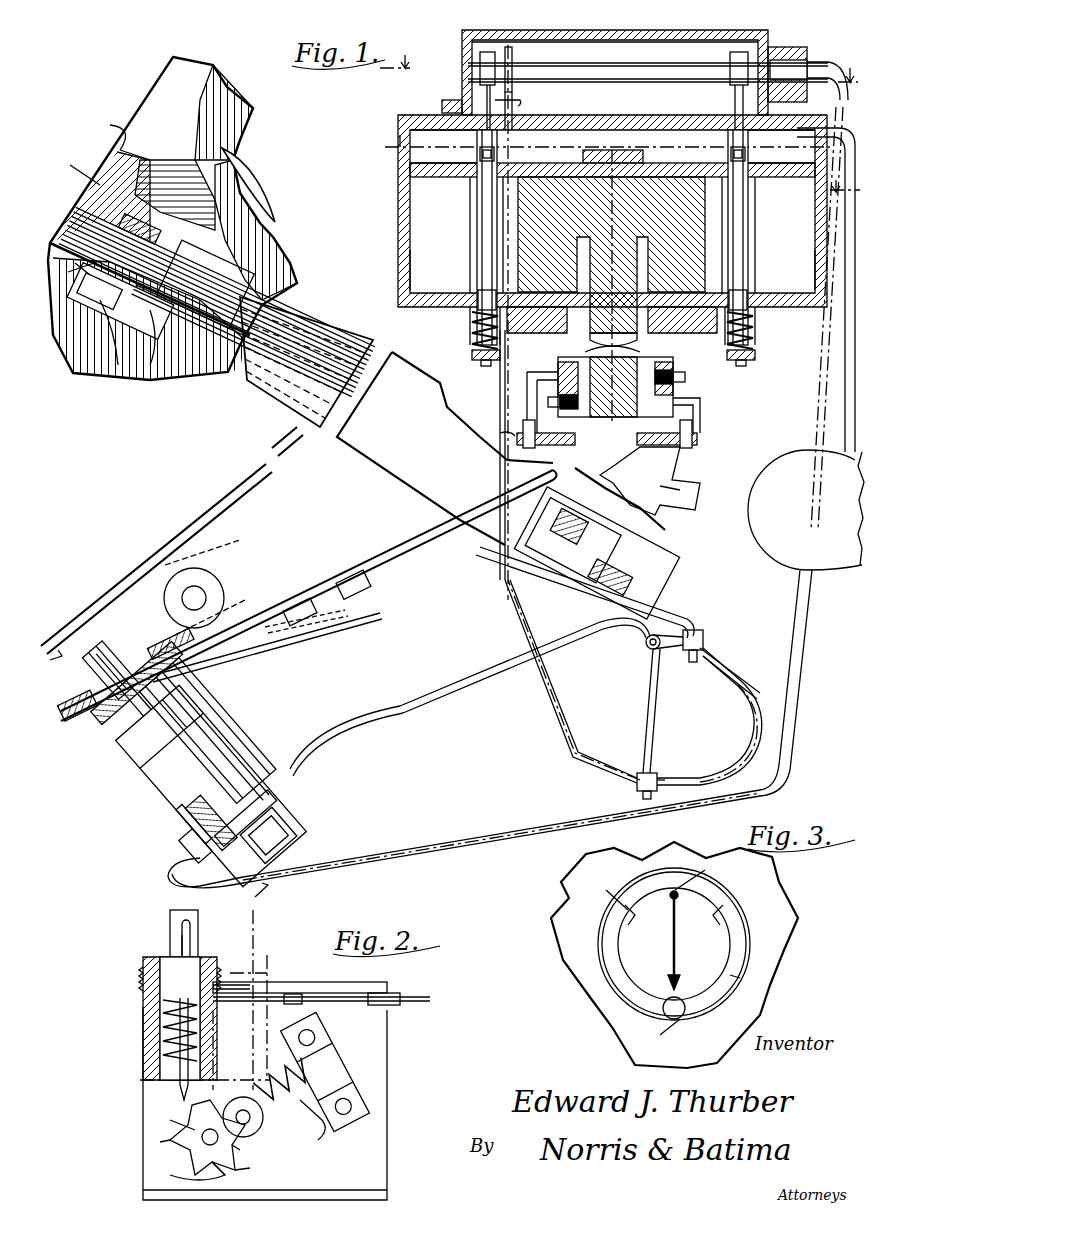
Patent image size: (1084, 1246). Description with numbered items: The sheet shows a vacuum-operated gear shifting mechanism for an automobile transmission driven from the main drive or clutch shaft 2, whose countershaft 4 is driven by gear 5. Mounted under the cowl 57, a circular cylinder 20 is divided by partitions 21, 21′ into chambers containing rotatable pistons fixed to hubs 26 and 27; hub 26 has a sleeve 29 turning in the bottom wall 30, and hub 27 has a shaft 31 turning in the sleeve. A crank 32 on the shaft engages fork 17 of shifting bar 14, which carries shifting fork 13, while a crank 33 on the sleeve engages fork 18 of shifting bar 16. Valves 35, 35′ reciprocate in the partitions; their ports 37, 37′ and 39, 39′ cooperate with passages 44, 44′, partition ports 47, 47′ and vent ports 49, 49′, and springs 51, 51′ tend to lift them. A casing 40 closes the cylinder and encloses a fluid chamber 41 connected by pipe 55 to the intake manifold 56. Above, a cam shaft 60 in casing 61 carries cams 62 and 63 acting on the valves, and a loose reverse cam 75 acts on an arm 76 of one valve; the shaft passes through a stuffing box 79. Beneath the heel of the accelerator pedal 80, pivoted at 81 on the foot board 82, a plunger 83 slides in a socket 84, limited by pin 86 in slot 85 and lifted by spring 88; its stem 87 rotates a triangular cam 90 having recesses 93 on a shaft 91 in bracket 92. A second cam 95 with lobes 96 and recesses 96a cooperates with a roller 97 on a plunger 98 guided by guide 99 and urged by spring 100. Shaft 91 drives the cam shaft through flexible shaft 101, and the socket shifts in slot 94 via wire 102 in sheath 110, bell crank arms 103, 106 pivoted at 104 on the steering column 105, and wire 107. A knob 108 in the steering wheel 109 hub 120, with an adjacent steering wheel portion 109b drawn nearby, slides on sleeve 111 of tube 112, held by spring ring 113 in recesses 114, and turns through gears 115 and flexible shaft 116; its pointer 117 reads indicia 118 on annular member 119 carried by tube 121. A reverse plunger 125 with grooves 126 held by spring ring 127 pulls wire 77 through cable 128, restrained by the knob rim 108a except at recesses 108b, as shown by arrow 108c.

In FIG. 1, the cowl 57 is at (462, 48).
In FIG. 1, the cam shaft 60 is at (655, 66).
In FIG. 1, the casing 61 is at (553, 44).
In FIG. 1, the cam 62 is at (478, 72).
In FIG. 1, the cam 63 is at (735, 72).
In FIG. 1, the reverse gear cam 75 is at (530, 80).
In FIG. 1, the arm 76 is at (518, 106).
In FIG. 1, the stuffing box 79 is at (808, 62).
In FIG. 1, the countershaft 4 is at (619, 73).
In FIG. 1, the gear 5 is at (607, 163).
In FIG. 1, the casing 40 is at (398, 118).
In FIG. 1, the circular cylinder 20 is at (398, 235).
In FIG. 1, the fluid chamber 41 is at (625, 160).
In FIG. 1, the hub 27 is at (660, 175).
In FIG. 1, the passage 44 is at (478, 176).
In FIG. 1, the passage 44′ is at (748, 180).
In FIG. 1, the port 37 is at (478, 152).
In FIG. 1, the port 37′ is at (750, 154).
In FIG. 1, the valve 35 is at (477, 218).
In FIG. 1, the valve 35′ is at (740, 238).
In FIG. 1, the partition 21 is at (425, 270).
In FIG. 1, the partition 21′ is at (793, 270).
In FIG. 1, the port 47 is at (478, 295).
In FIG. 1, the port 47′ is at (748, 295).
In FIG. 1, the port 39 is at (471, 314).
In FIG. 1, the port 39′ is at (752, 314).
In FIG. 1, the port 49 is at (472, 330).
In FIG. 1, the vent port 49′ is at (755, 330).
In FIG. 1, the spring 51 is at (472, 353).
In FIG. 1, the spring 51′ is at (727, 353).
In FIG. 1, the bottom wall 30 is at (540, 312).
In FIG. 1, the hub 26 is at (672, 312).
In FIG. 1, the sleeve 29 is at (640, 340).
In FIG. 1, the central stem or shaft 31 is at (590, 345).
In FIG. 1, the crank 32 is at (700, 404).
In FIG. 1, the crank 33 is at (527, 400).
In FIG. 1, the fork 18 is at (505, 433).
In FIG. 1, the shifting bar 16 is at (575, 439).
In FIG. 1, the fork 17 is at (697, 439).
In FIG. 1, the shifting bar 14 is at (678, 462).
In FIG. 1, the shifting fork 13 is at (678, 488).
In FIG. 1, the pipe 55 is at (845, 368).
In FIG. 1, the intake manifold 56 is at (786, 466).
In FIG. 1, the steering column 105 is at (672, 565).
In FIG. 1, the tube 112 is at (580, 535).
In FIG. 1, the gears 115 is at (615, 560).
In FIG. 1, the wire 107 is at (684, 600).
In FIG. 1, the pivot 104 is at (650, 647).
In FIG. 1, the arm 106 is at (690, 660).
In FIG. 1, the arm 103 is at (650, 740).
In FIG. 1, the flexible cable 77 is at (758, 722).
In FIG. 1, the flexible shaft 116 is at (420, 702).
In FIG. 1, the accelerator pedal 80 is at (118, 597).
In FIG. 1, the foot board 82 is at (290, 600).
In FIG. 1, the pivot 81 is at (205, 590).
In FIG. 1, the outer sheath 110 is at (345, 606).
In FIG. 1, the wire 102 is at (250, 655).
In FIG. 2, the wire 102 is at (420, 996).
In FIG. 1, the plunger 83 is at (118, 660).
In FIG. 2, the plunger 83 is at (170, 915).
In FIG. 1, the rectangular socket 84 is at (150, 750).
In FIG. 2, the rectangular socket 84 is at (150, 968).
In FIG. 1, the bracket 92 is at (300, 815).
In FIG. 2, the bracket 92 is at (380, 1079).
In FIG. 1, the stem 87 is at (212, 785).
In FIG. 2, the stem 87 is at (180, 1085).
In FIG. 1, the shaft 91 is at (236, 805).
In FIG. 2, the shaft 91 is at (228, 1170).
In FIG. 1, the triangular cam 90 is at (245, 814).
In FIG. 2, the triangular cam 90 is at (190, 1140).
In FIG. 1, the cam 95 is at (185, 812).
In FIG. 2, the cam 95 is at (190, 1168).
In FIG. 1, the flexible shaft 101 is at (440, 850).
In FIG. 1, the main drive or clutch shaft 2 is at (154, 775).
In FIG. 1, the steering wheel 109 is at (148, 103).
In FIG. 1, the knob 108 is at (118, 148).
In FIG. 3, the knob 108 is at (674, 944).
In FIG. 1, the overhanging rim 108a is at (102, 129).
In FIG. 3, the overhanging rim 108a is at (705, 870).
In FIG. 3, the recesses 108b is at (610, 883).
In FIG. 3, the arrow 108c is at (676, 950).
In FIG. 1, the housing part 109b is at (73, 169).
In FIG. 1, the annular member 119 is at (185, 116).
In FIG. 3, the annular member 119 is at (712, 898).
In FIG. 1, the spring ring 113 is at (160, 165).
In FIG. 1, the sleeve 111 is at (225, 196).
In FIG. 1, the hub 120 is at (272, 214).
In FIG. 3, the hub 120 is at (575, 966).
In FIG. 1, the circumferential recesses 114 is at (214, 301).
In FIG. 1, the flexible cable 128 is at (270, 385).
In FIG. 1, the tube 121 is at (300, 302).
In FIG. 1, the spring ring 127 is at (120, 300).
In FIG. 1, the circular grooves 126 is at (118, 365).
In FIG. 1, the plunger 125 is at (150, 365).
In FIG. 3, the plunger 125 is at (666, 1036).
In FIG. 2, the vertical slot 85 is at (182, 930).
In FIG. 2, the pin 86 is at (188, 962).
In FIG. 2, the slot 94 is at (270, 985).
In FIG. 2, the spring 88 is at (170, 1033).
In FIG. 2, the guide 99 is at (322, 1040).
In FIG. 2, the plunger 98 is at (260, 1080).
In FIG. 2, the roller 97 is at (263, 1122).
In FIG. 2, the recesses 93 is at (170, 1122).
In FIG. 2, the lobes 96 is at (242, 1148).
In FIG. 2, the recesses 96a is at (160, 1150).
In FIG. 2, the spring 100 is at (322, 1131).
In FIG. 3, the pointer 117 is at (670, 985).
In FIG. 3, the indicia 118 is at (752, 984).